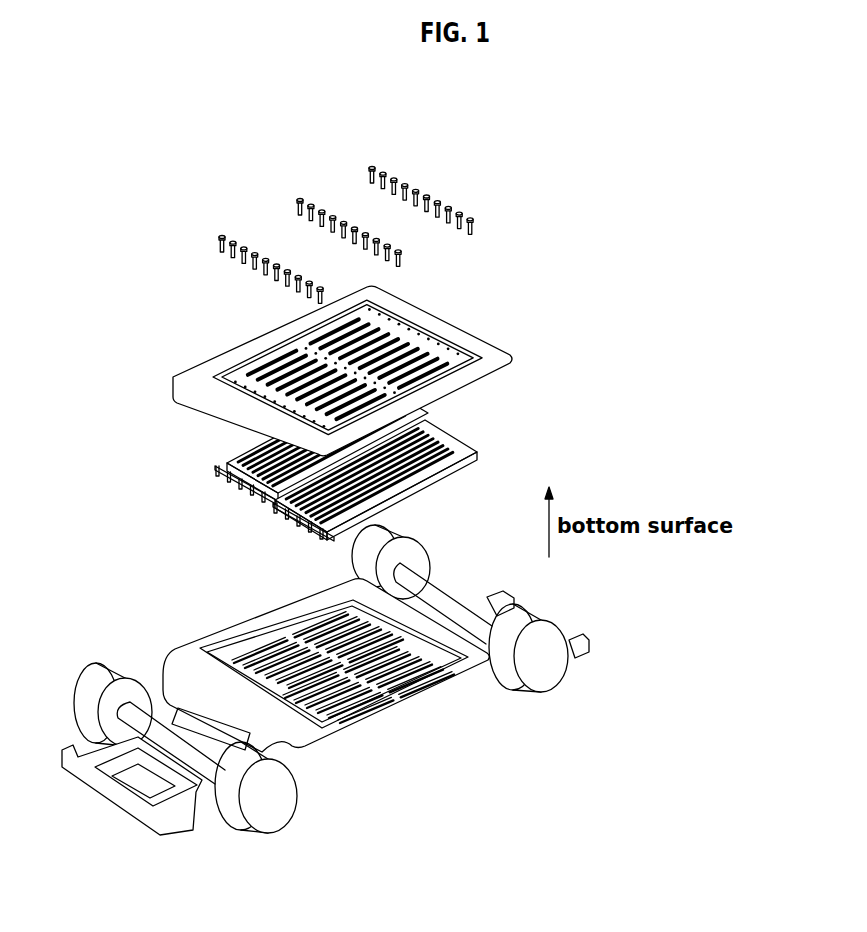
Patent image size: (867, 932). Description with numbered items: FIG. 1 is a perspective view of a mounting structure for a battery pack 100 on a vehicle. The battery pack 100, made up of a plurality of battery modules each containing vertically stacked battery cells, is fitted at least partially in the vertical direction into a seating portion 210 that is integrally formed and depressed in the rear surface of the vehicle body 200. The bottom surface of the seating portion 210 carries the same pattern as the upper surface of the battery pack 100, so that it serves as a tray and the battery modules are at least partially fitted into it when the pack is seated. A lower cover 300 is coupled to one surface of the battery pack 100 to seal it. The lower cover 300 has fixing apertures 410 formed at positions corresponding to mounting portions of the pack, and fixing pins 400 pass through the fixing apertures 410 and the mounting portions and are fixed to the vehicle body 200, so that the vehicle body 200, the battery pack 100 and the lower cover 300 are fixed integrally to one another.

The battery pack 100 is at (452, 437).
The vehicle body 200 is at (433, 683).
The seating portion 210 is at (398, 636).
The lower cover 300 is at (477, 343).
The fixing pins 400 is at (370, 166).
The fixing apertures 410 is at (447, 345).